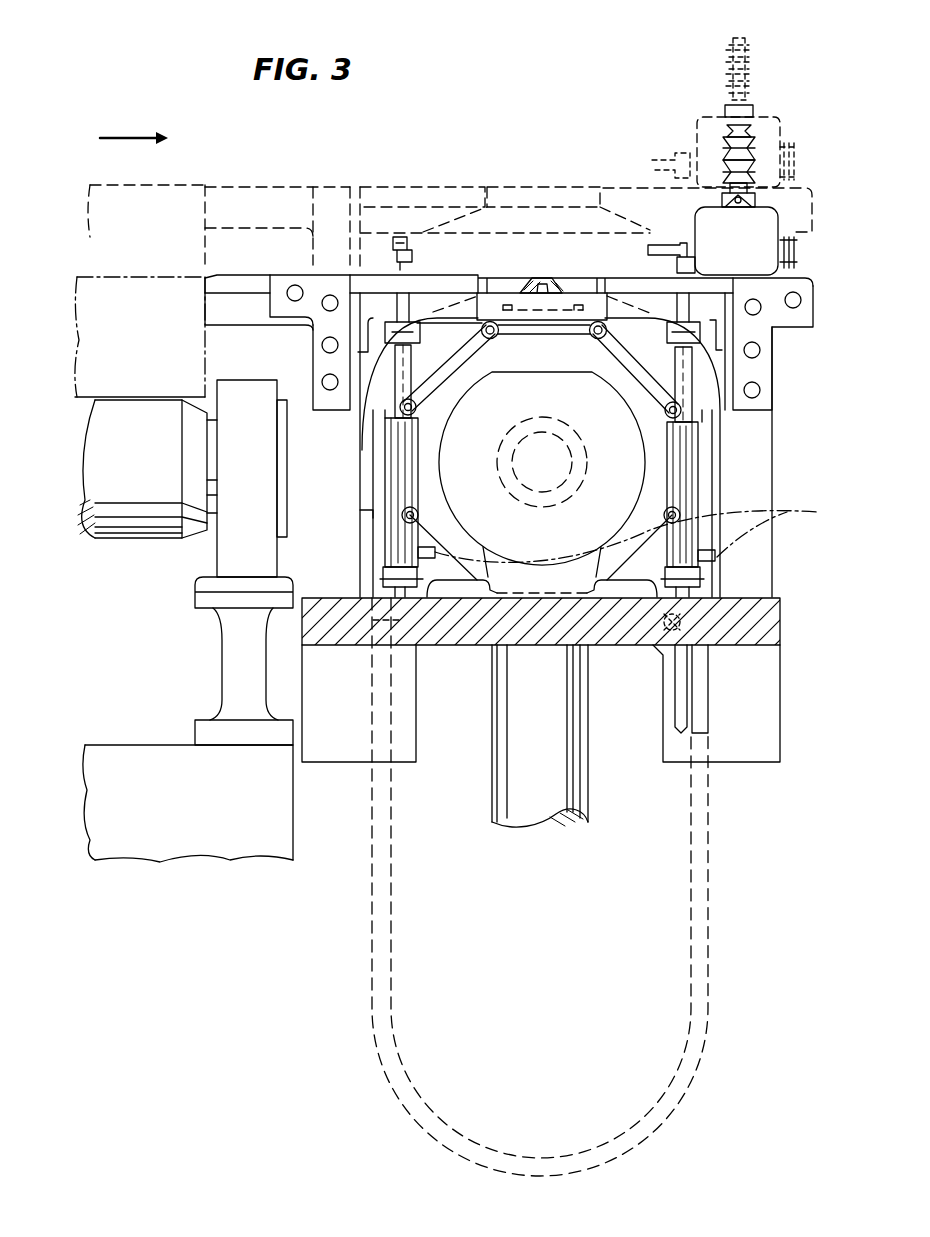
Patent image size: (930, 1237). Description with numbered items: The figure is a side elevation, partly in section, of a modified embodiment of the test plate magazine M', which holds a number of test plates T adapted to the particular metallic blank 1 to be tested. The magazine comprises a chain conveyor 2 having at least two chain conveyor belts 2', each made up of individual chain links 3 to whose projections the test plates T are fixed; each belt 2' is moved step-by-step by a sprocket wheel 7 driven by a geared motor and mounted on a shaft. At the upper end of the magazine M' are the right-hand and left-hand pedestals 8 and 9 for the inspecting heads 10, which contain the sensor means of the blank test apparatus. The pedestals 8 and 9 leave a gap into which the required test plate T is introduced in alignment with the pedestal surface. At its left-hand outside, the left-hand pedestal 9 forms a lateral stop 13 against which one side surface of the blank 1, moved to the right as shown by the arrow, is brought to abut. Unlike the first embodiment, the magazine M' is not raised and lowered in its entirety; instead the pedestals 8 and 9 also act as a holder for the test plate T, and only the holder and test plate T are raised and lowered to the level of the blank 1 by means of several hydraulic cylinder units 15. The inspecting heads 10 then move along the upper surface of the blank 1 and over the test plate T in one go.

The blank 1 is at (141, 353).
The chain conveyor 2 is at (768, 689).
The chain conveyor belt 2' is at (581, 887).
The chain link 3 is at (588, 338).
The sprocket wheel 7 is at (614, 437).
The right-hand pedestal 8 is at (625, 287).
The left-hand pedestal 9 is at (466, 282).
The inspecting head 10 is at (763, 222).
The lateral stop 13 is at (200, 297).
The hydraulic cylinder unit 15 is at (397, 483).
The test plate T is at (533, 193).
The test plate magazine M' is at (553, 600).